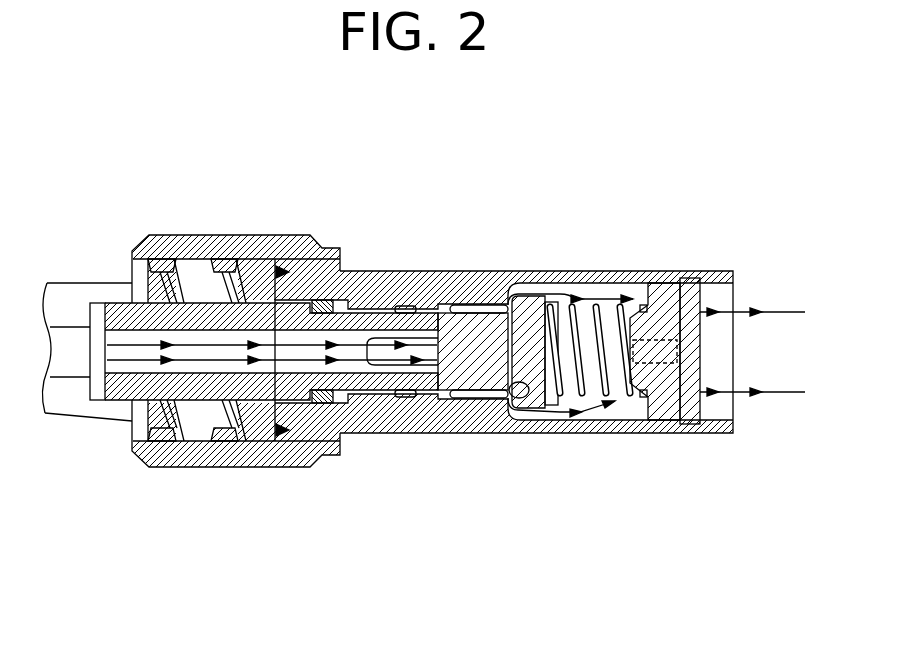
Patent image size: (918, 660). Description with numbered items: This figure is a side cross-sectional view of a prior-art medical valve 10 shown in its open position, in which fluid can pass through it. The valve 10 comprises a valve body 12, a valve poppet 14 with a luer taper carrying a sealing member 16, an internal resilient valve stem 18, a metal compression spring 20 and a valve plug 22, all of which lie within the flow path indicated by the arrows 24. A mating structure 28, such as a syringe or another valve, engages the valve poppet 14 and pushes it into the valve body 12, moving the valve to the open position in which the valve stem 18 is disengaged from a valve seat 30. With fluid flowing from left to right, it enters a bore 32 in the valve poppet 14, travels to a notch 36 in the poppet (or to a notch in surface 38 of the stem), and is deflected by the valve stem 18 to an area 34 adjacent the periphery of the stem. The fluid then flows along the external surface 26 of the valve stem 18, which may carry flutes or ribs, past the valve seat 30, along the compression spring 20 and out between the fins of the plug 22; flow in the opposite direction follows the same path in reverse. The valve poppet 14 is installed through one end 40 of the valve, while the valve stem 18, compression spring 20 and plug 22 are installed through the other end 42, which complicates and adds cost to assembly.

The valve 10 is at (190, 511).
The valve body 12 is at (362, 437).
The valve poppet 14 is at (183, 412).
The sealing member 16 is at (332, 300).
The valve stem 18 is at (485, 298).
The compression spring 20 is at (598, 290).
The valve plug 22 is at (707, 366).
The arrows 24 is at (128, 367).
The external surface 26 is at (483, 397).
The mating structure 28 is at (81, 300).
The valve seat 30 is at (528, 390).
The bore 32 is at (228, 337).
The area 34 is at (440, 397).
The notch 36 is at (414, 351).
The surface 38 is at (414, 351).
The one end 40 is at (130, 251).
The other end 42 is at (733, 432).